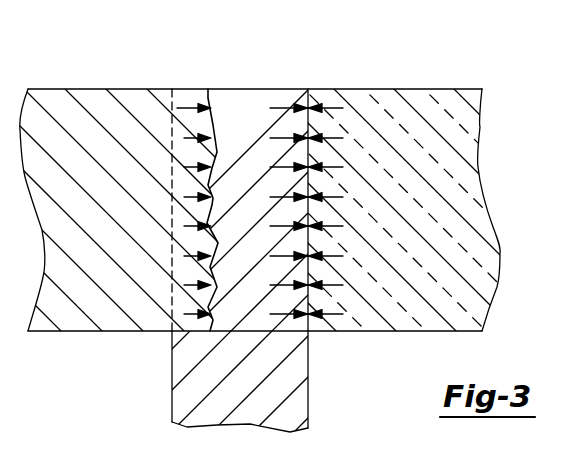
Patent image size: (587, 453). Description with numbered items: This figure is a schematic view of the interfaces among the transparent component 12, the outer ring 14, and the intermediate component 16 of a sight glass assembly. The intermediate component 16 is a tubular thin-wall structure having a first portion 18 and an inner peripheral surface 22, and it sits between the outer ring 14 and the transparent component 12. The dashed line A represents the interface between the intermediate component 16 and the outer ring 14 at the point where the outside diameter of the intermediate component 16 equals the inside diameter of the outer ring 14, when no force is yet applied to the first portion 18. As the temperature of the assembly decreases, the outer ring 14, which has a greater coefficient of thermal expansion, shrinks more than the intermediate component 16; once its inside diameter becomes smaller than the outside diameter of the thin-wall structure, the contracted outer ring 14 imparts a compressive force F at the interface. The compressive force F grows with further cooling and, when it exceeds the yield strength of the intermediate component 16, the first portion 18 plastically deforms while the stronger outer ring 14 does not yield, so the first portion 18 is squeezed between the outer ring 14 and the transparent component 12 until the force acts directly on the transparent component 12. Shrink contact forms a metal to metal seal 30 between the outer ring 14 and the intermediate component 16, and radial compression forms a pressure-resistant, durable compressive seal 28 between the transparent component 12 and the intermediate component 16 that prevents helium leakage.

The transparent component 12 is at (445, 102).
The outer ring 14 is at (80, 100).
The intermediate component 16 is at (162, 396).
The first portion 18 is at (252, 108).
The inner peripheral surface 22 is at (308, 400).
The compressive seal 28 is at (308, 120).
The metal to metal seal 30 is at (214, 147).
The dashed line A is at (170, 108).
The compressive force F is at (184, 108).